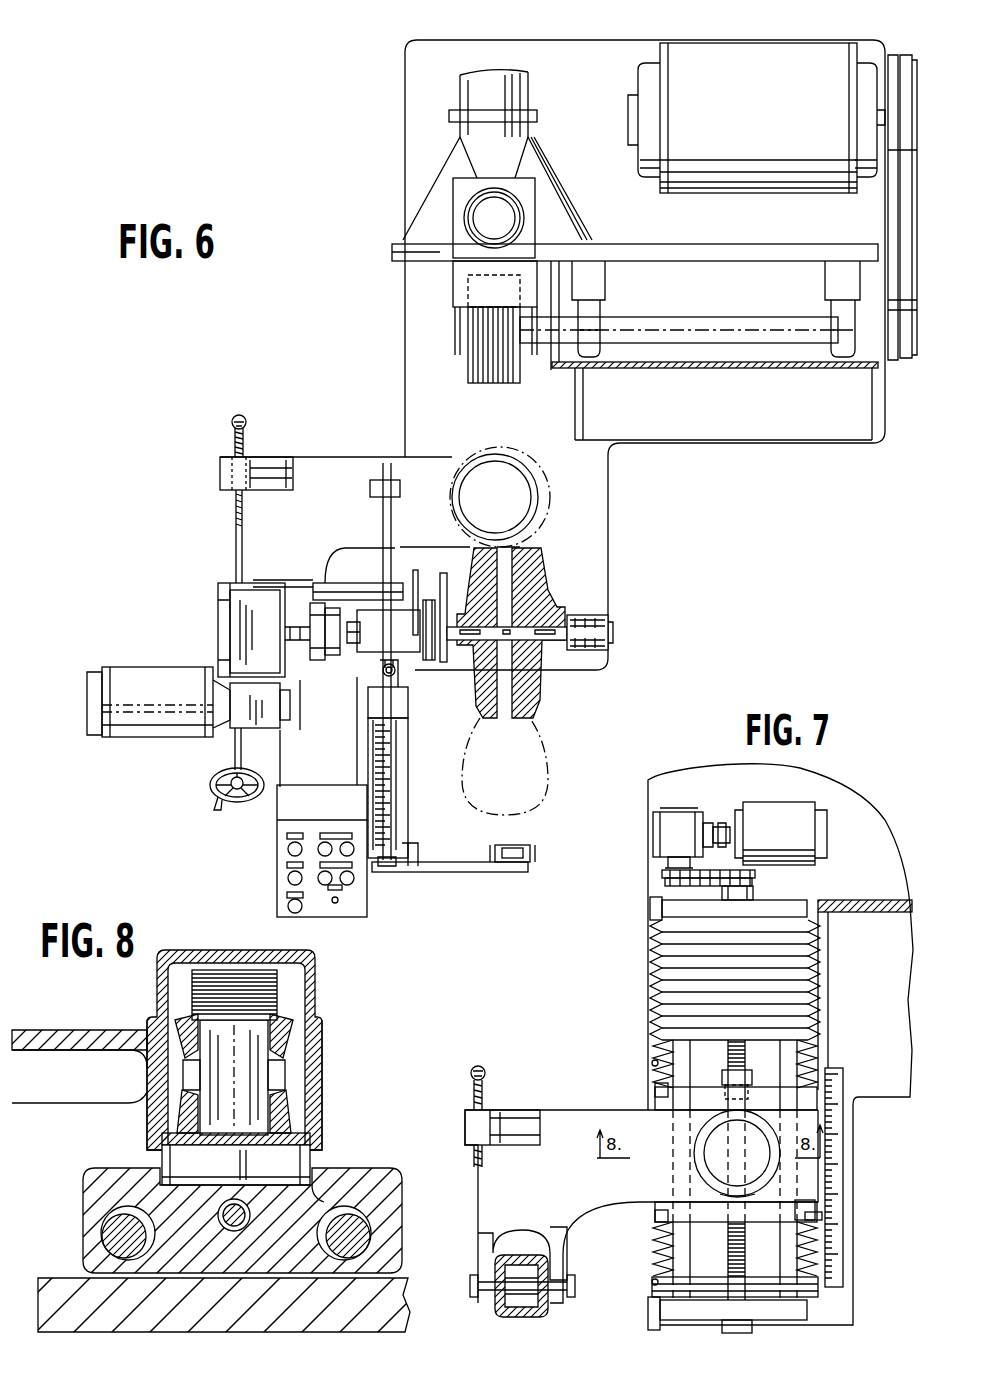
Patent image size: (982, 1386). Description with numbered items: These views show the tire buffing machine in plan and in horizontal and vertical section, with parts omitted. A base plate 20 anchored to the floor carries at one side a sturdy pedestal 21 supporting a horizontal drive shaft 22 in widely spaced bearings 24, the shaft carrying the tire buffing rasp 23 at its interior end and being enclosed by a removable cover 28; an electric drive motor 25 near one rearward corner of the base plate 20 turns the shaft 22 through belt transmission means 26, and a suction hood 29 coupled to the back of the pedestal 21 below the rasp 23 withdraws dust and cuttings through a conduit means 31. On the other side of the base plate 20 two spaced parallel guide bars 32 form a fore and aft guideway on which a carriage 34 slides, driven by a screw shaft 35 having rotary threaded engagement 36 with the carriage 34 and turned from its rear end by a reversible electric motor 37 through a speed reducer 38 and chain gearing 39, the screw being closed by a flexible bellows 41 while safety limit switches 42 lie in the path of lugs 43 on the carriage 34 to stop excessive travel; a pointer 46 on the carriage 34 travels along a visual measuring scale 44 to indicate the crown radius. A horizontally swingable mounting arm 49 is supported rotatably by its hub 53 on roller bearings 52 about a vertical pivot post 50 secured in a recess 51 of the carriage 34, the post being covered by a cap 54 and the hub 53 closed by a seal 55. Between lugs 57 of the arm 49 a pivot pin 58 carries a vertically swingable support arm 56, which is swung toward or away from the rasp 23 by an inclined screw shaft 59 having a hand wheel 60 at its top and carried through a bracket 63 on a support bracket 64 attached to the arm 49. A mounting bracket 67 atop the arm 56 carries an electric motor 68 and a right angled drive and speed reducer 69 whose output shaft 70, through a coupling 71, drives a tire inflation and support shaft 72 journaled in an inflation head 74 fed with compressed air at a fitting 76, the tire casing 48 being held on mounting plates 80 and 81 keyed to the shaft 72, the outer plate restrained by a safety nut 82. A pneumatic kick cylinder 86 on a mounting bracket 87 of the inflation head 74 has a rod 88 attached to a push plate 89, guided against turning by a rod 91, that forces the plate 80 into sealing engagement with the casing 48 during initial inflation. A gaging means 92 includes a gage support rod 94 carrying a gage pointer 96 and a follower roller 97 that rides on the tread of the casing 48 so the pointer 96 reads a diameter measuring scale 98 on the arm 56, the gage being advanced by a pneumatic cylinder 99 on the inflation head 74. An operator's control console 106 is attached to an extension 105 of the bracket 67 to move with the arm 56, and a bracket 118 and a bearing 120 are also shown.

In FIG. 6, the base plate 20 is at (598, 498).
In FIG. 7, the base plate 20 is at (843, 1300).
In FIG. 6, the pedestal 21 is at (769, 250).
In FIG. 6, the drive shaft 22 is at (697, 318).
In FIG. 6, the tire buffing rasp 23 is at (505, 383).
In FIG. 6, the bearings 24 is at (592, 340).
In FIG. 6, the electric drive motor 25 is at (725, 53).
In FIG. 6, the belt transmission means 26 is at (905, 222).
In FIG. 6, the removable cover 28 is at (722, 371).
In FIG. 6, the suction hood 29 is at (556, 210).
In FIG. 6, the conduit means 31 is at (468, 92).
In FIG. 7, the guide bars 32 is at (655, 1058).
In FIG. 8, the guide bars 32 is at (118, 1230).
In FIG. 7, the carriage 34 is at (703, 1088).
In FIG. 8, the carriage 34 is at (92, 1183).
In FIG. 7, the screw shaft 35 is at (727, 1237).
In FIG. 8, the screw shaft 35 is at (250, 1211).
In FIG. 7, the rotary threaded engagement 36 is at (742, 1077).
In FIG. 7, the reversible electric motor 37 is at (778, 813).
In FIG. 7, the speed reducer 38 is at (685, 823).
In FIG. 7, the chain gearing 39 is at (727, 873).
In FIG. 7, the flexible bellows 41 is at (815, 955).
In FIG. 7, the safety limit switches 42 is at (648, 903).
In FIG. 7, the lugs 43 is at (655, 1091).
In FIG. 7, the visual measuring scale 44 is at (838, 1142).
In FIG. 7, the pointer 46 is at (818, 1213).
In FIG. 6, the tire casing 48 is at (547, 753).
In FIG. 6, the mounting arm 49 is at (343, 460).
In FIG. 7, the mounting arm 49 is at (568, 1120).
In FIG. 8, the mounting arm 49 is at (90, 1036).
In FIG. 8, the vertical pivot post 50 is at (238, 1082).
In FIG. 8, the recess 51 is at (318, 1195).
In FIG. 8, the roller bearings 52 is at (298, 1042).
In FIG. 6, the hub 53 is at (540, 517).
In FIG. 8, the hub 53 is at (316, 1102).
In FIG. 6, the cap 54 is at (521, 511).
In FIG. 8, the cap 54 is at (313, 982).
In FIG. 8, the seal 55 is at (165, 1142).
In FIG. 7, the support arm 56 is at (537, 1317).
In FIG. 7, the lugs 57 is at (485, 1273).
In FIG. 7, the pivot pin 58 is at (522, 1288).
In FIG. 6, the inclined screw shaft 59 is at (234, 541).
In FIG. 7, the inclined screw shaft 59 is at (484, 1098).
In FIG. 6, the hand wheel 60 is at (212, 795).
In FIG. 6, the bracket 63 is at (220, 476).
In FIG. 6, the support bracket 64 is at (270, 463).
In FIG. 6, the mounting bracket 67 is at (218, 598).
In FIG. 6, the electric motor 68 is at (174, 725).
In FIG. 6, the right angled drive and speed reducer 69 is at (240, 651).
In FIG. 6, the output shaft 70 is at (297, 632).
In FIG. 6, the coupling 71 is at (325, 660).
In FIG. 6, the tire inflation and support shaft 72 is at (490, 638).
In FIG. 6, the inflation head 74 is at (396, 636).
In FIG. 6, the fitting 76 is at (378, 668).
In FIG. 6, the mounting plate 80 is at (477, 565).
In FIG. 6, the mounting plate 81 is at (538, 585).
In FIG. 6, the safety nut 82 is at (598, 650).
In FIG. 6, the pneumatic kick cylinder 86 is at (361, 583).
In FIG. 6, the mounting bracket 87 is at (413, 572).
In FIG. 6, the rod 88 is at (425, 598).
In FIG. 6, the push plate 89 is at (447, 663).
In FIG. 6, the rod 91 is at (331, 577).
In FIG. 6, the gaging means 92 is at (478, 873).
In FIG. 6, the gage support rod 94 is at (390, 463).
In FIG. 6, the gage pointer 96 is at (418, 845).
In FIG. 6, the follower roller 97 is at (510, 846).
In FIG. 6, the diameter measuring scale 98 is at (403, 797).
In FIG. 6, the pneumatic cylinder 99 is at (375, 513).
In FIG. 6, the extension 105 is at (328, 760).
In FIG. 6, the operator's control console 106 is at (282, 849).
In FIG. 6, the bracket 118 is at (452, 196).
In FIG. 6, the bearing 120 is at (515, 222).